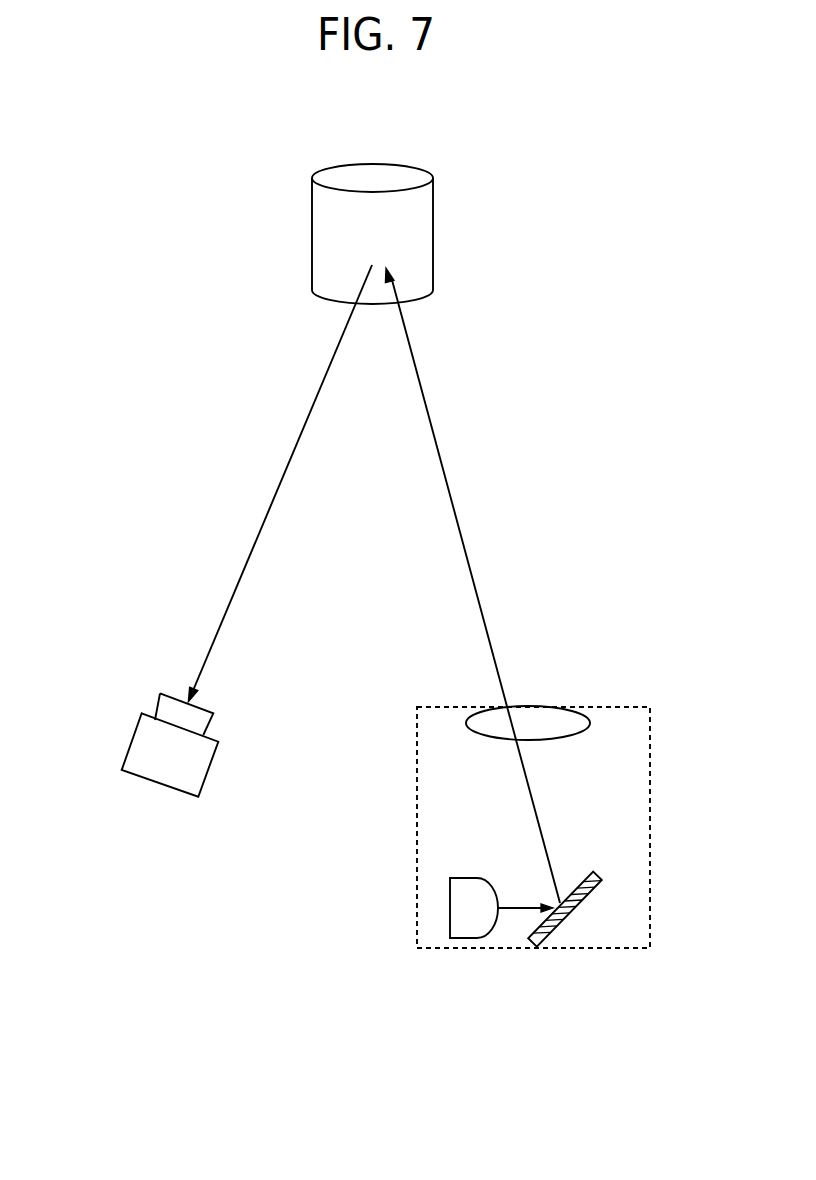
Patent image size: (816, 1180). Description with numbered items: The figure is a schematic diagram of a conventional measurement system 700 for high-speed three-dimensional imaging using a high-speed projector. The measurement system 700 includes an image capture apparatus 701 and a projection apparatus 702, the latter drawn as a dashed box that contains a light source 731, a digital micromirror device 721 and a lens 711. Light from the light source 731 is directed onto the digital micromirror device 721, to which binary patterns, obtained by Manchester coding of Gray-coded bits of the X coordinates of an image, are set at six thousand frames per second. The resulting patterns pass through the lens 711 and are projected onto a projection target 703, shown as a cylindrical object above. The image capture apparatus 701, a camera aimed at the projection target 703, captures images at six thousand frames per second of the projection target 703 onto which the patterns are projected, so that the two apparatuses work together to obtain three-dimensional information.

The measurement system 700 is at (135, 275).
The image capture apparatus 701 is at (148, 785).
The projection apparatus 702 is at (650, 865).
The projection target 703 is at (433, 226).
The lens 711 is at (535, 716).
The digital micromirror device 721 is at (563, 914).
The light source 731 is at (463, 938).